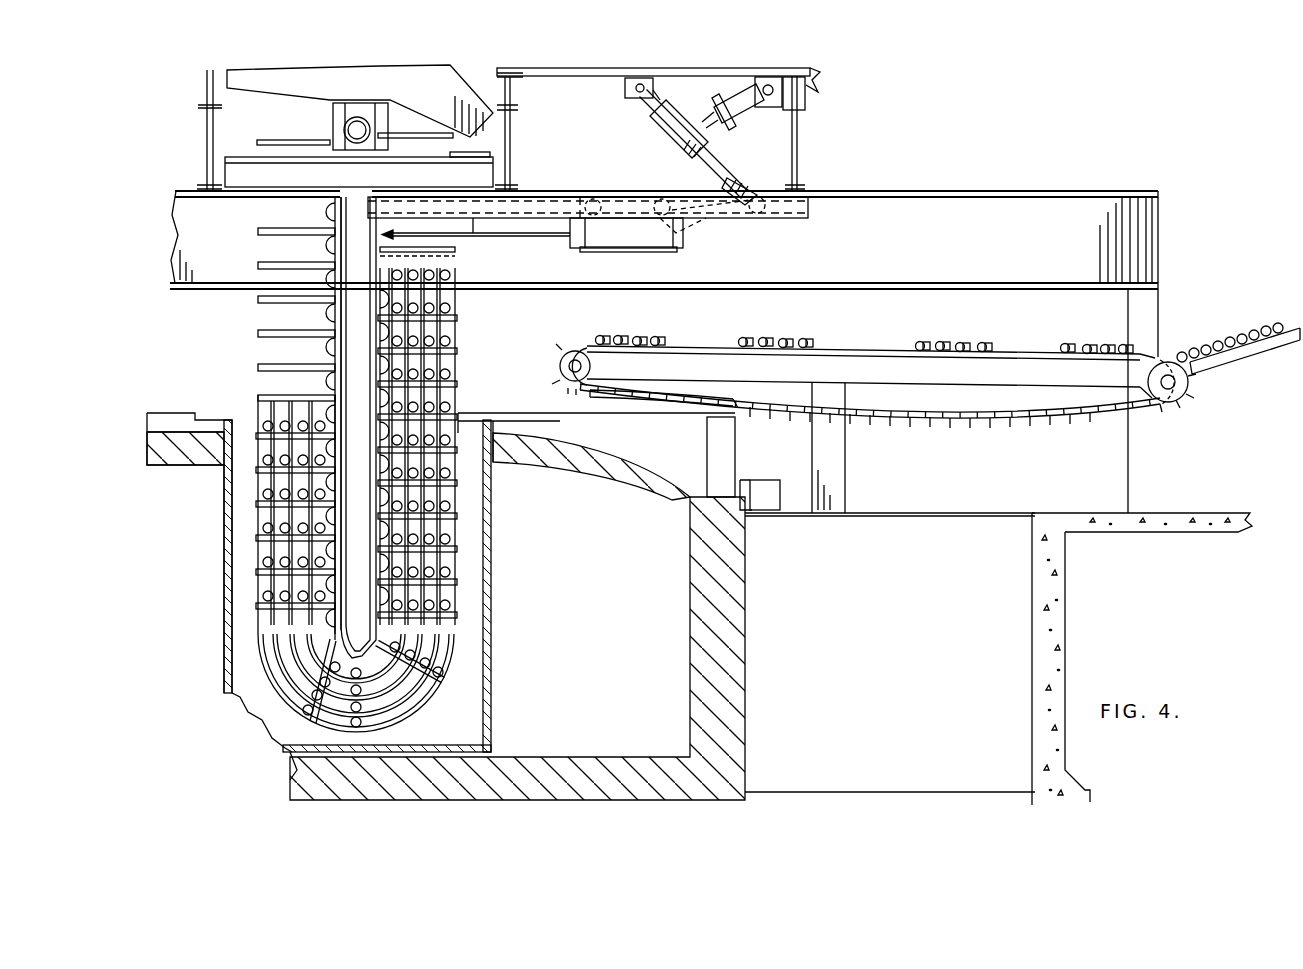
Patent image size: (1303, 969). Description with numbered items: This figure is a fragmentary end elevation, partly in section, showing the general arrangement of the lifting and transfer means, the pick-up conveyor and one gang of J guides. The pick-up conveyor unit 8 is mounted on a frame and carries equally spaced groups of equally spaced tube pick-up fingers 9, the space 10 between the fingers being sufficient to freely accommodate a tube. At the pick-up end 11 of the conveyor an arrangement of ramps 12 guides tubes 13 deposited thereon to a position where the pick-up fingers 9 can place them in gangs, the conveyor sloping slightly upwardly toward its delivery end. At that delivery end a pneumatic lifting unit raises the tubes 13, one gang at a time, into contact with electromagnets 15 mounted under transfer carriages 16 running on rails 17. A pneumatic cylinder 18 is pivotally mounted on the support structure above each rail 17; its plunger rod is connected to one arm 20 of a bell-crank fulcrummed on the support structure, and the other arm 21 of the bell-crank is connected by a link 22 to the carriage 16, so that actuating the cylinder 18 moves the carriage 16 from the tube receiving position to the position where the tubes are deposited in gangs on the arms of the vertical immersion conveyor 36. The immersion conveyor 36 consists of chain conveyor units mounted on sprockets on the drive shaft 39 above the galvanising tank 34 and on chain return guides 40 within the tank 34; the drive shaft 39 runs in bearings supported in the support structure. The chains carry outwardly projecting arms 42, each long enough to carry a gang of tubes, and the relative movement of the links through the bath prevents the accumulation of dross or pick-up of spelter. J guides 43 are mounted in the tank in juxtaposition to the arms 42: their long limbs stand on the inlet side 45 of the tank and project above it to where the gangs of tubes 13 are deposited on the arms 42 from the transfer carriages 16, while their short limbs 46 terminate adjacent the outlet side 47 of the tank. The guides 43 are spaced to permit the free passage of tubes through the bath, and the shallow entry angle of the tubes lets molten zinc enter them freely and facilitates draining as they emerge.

The pick-up conveyor unit 8 is at (908, 380).
The tube pick-up fingers 9 is at (786, 339).
The space between pick-up fingers 10 is at (725, 345).
The pick-up end 11 is at (1168, 369).
The ramps 12 is at (1262, 343).
The tubes 13 is at (285, 422).
The electromagnets 15 is at (677, 250).
The transfer carriages 16 is at (618, 246).
The rails 17 is at (805, 212).
The pneumatic cylinders 18 is at (742, 106).
The bell-crank arm 20 is at (648, 100).
The bell-crank arm 21 is at (718, 160).
The link 22 is at (697, 224).
The galvanising tank 34 is at (224, 580).
The vertical immersion conveyor 36 is at (275, 315).
The drive shaft 39 is at (345, 128).
The chain return guides 40 is at (371, 643).
The arms 42 is at (272, 362).
The J guides 43 is at (456, 367).
The inlet side 45 is at (471, 433).
The short limbs 46 is at (262, 498).
The outlet side 47 is at (250, 425).